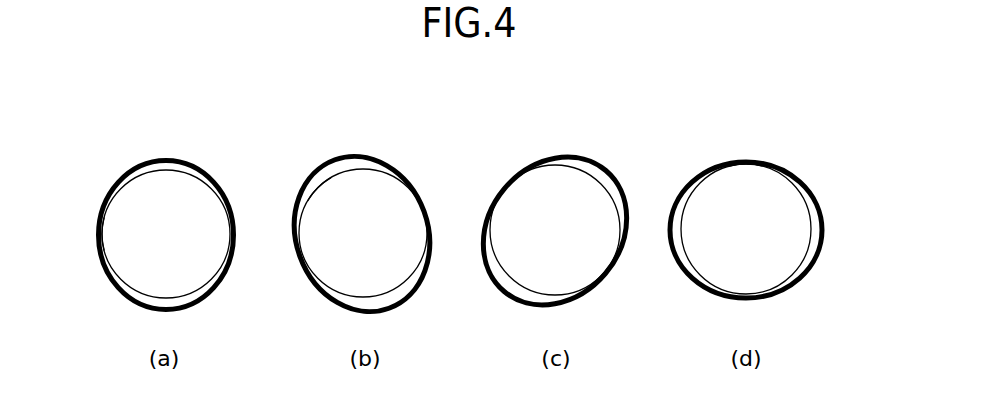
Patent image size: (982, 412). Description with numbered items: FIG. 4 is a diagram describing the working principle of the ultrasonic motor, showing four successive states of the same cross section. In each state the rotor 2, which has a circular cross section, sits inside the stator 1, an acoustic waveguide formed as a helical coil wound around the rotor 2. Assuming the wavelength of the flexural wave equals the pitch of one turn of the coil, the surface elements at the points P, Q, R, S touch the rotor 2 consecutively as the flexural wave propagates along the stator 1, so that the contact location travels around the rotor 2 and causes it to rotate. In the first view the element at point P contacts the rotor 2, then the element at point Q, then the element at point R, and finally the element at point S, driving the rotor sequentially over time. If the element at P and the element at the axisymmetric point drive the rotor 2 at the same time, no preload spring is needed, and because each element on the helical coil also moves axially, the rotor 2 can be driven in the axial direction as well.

The stator 1 is at (178, 158).
The rotor 2 is at (456, 231).
The point P is at (90, 233).
The point Q is at (302, 196).
The point R is at (506, 177).
The point S is at (746, 149).